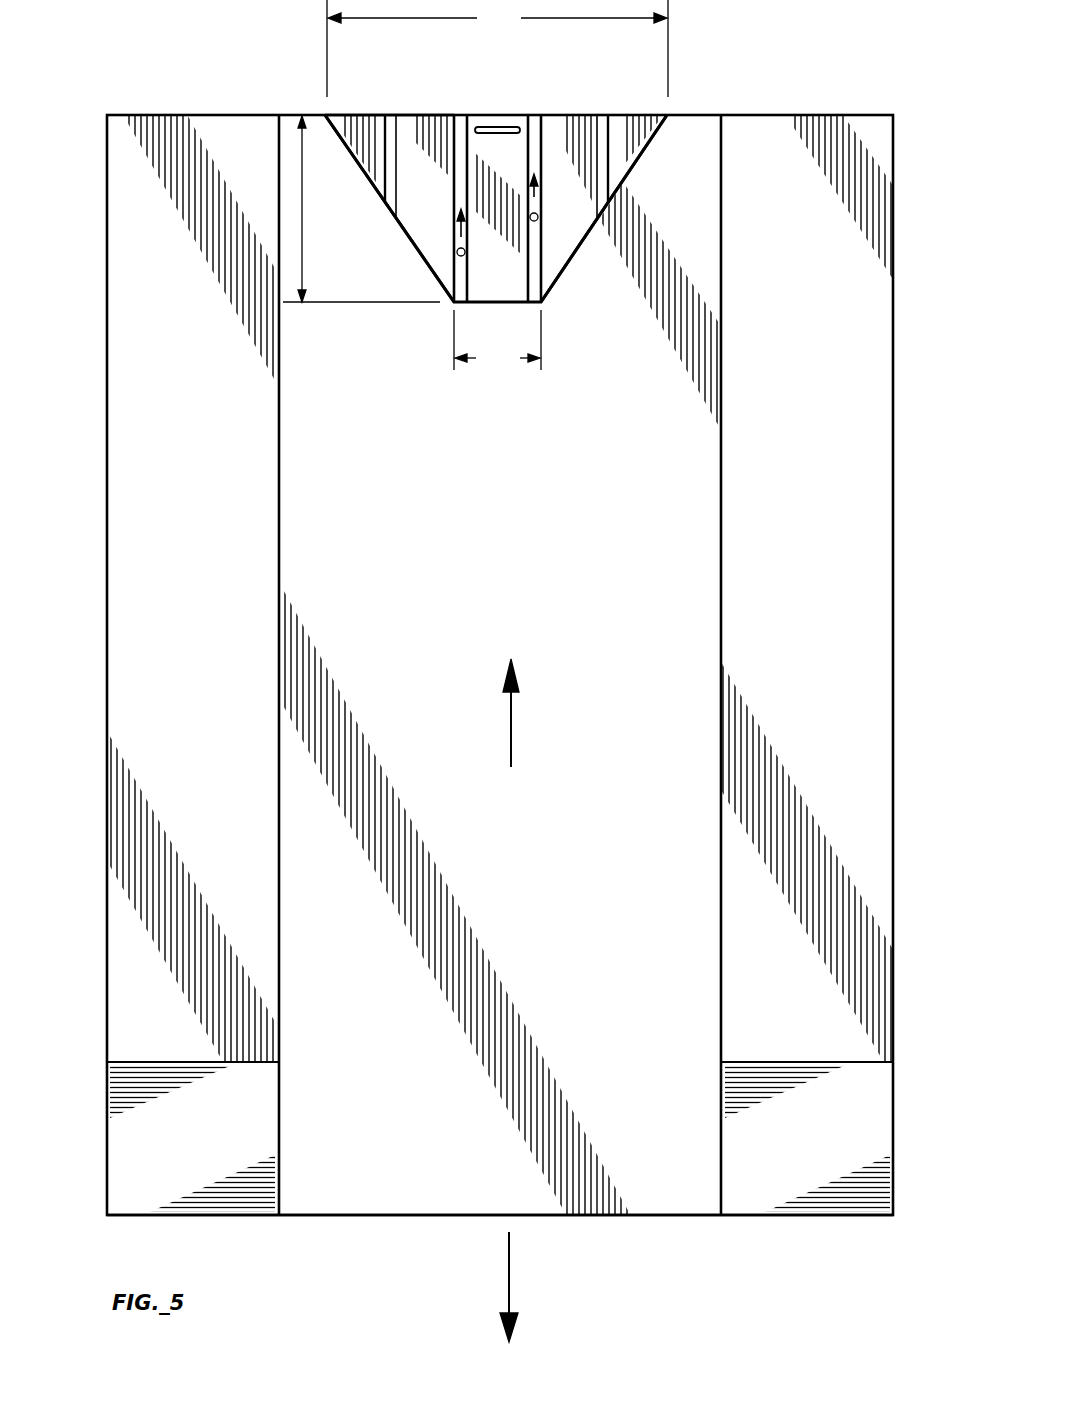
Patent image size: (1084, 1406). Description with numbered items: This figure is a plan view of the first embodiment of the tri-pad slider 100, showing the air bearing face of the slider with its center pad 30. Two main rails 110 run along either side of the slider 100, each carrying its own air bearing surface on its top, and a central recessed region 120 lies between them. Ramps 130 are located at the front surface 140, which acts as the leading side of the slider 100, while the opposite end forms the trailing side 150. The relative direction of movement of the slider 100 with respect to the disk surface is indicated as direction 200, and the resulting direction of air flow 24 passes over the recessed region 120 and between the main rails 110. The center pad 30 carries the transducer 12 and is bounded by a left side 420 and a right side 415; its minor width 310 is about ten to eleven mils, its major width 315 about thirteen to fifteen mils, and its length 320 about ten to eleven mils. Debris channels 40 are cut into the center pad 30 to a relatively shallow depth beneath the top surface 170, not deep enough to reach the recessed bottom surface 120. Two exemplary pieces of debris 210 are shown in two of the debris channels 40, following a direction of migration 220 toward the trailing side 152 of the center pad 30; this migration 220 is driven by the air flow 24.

The transducer 12 is at (490, 126).
The direction of air flow 24 is at (511, 728).
The center pad 30 is at (658, 113).
The debris channels 40 is at (459, 113).
The tri-pad slider 100 is at (721, 104).
The main rails 110 is at (196, 529).
The central recessed region 120 is at (541, 590).
The ramps 130 is at (221, 1144).
The front surface 140 is at (670, 1232).
The trailing side 150 is at (277, 104).
The trailing side of the center pad 152 is at (353, 106).
The top surface 170 is at (513, 299).
The direction of movement 200 is at (510, 1293).
The debris 210 is at (466, 253).
The direction of migration 220 is at (531, 197).
The minor width 310 is at (497, 340).
The major width 315 is at (497, 48).
The length 320 is at (361, 209).
The right side 415 is at (614, 213).
The left side 420 is at (378, 212).